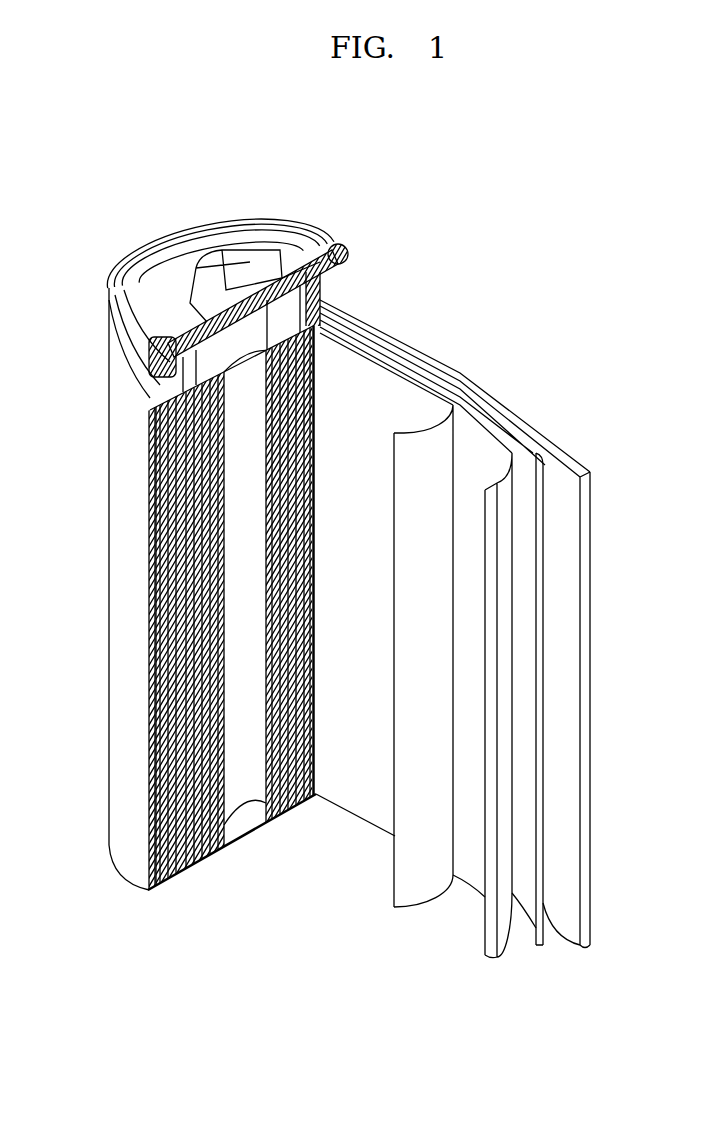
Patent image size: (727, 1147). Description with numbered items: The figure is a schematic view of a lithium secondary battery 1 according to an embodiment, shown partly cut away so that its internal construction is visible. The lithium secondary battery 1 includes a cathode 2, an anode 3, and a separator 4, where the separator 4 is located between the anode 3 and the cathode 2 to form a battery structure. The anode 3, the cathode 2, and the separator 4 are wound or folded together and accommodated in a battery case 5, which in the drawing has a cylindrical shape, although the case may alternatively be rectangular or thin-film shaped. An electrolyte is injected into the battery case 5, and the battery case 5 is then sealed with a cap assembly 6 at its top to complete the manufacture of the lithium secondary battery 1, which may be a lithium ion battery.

The lithium secondary battery 1 is at (453, 243).
The cathode 2 is at (582, 448).
The anode 3 is at (483, 405).
The separator 4 is at (427, 437).
The battery case 5 is at (120, 598).
The cap assembly 6 is at (220, 254).